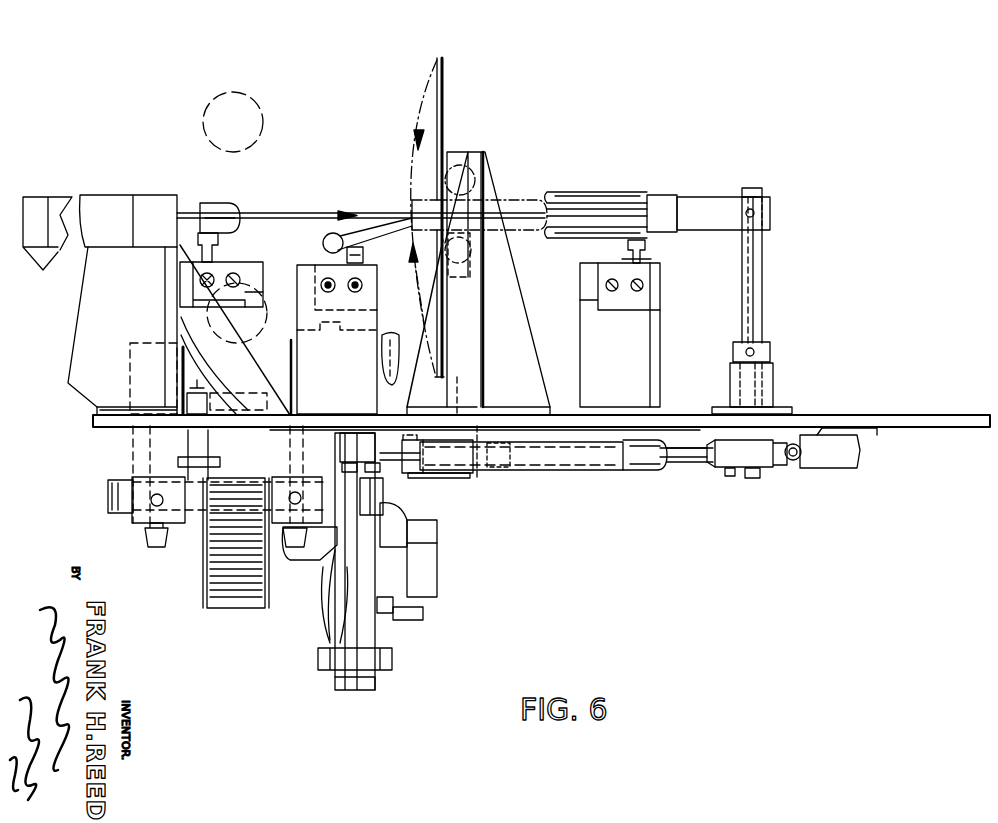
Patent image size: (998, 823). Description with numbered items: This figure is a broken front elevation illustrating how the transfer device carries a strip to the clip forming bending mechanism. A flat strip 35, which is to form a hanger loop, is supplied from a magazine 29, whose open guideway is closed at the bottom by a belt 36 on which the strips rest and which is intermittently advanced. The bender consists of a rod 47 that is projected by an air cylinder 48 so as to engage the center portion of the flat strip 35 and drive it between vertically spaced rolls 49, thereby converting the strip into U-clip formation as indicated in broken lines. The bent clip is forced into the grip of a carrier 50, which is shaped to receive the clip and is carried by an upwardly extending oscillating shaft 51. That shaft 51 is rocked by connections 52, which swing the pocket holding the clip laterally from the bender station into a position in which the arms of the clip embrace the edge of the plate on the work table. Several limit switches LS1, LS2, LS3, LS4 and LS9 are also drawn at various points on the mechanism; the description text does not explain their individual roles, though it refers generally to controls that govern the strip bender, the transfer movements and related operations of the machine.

The magazine 29 is at (953, 413).
The flat strip 35 is at (443, 113).
The belt 36 is at (238, 612).
The rod 47 is at (287, 213).
The air cylinder 48 is at (113, 195).
The rolls 49 is at (470, 182).
The carrier 50 is at (612, 200).
The oscillating shaft 51 is at (763, 318).
The connections 52 is at (688, 463).
The limit switch LS1 is at (235, 309).
The limit switch LS2 is at (355, 316).
The limit switch LS3 is at (638, 323).
The limit switch LS4 is at (782, 453).
The limit switch LS9 is at (237, 377).